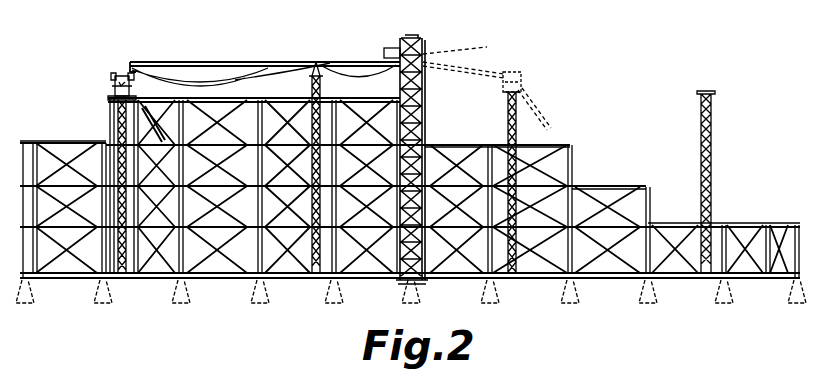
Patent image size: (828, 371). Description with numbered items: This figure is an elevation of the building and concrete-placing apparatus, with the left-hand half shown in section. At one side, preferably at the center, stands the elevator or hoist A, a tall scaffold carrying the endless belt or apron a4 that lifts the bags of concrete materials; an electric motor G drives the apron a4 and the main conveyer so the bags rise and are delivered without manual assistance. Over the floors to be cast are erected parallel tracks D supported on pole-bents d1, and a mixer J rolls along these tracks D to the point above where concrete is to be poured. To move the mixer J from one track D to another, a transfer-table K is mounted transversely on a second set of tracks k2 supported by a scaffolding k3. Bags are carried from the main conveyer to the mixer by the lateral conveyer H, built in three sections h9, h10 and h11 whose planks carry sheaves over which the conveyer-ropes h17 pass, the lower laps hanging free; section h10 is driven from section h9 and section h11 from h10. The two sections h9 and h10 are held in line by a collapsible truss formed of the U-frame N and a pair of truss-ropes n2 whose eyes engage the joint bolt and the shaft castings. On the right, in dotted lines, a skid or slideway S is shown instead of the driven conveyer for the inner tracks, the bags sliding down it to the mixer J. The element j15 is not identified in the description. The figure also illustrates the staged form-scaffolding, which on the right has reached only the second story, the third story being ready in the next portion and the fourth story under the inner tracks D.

The elevator or hoist A is at (424, 84).
The tower base a is at (400, 192).
The belt or apron a4 is at (441, 62).
The electric motor G is at (386, 49).
The first section of lateral conveyer h9 is at (166, 63).
The second section of lateral conveyer h10 is at (301, 63).
The third section of lateral conveyer h11 is at (352, 63).
The conveyer-ropes h17 is at (366, 79).
The U-frame N is at (236, 78).
The lateral conveyer H is at (263, 66).
The truss-ropes or cables n2 is at (234, 80).
The second set of tracks k2 is at (240, 103).
The scaffolding k3 is at (203, 135).
The transfer-table K is at (111, 92).
The mixer J is at (114, 74).
The parallel tracks D is at (708, 91).
The pole-bents d1 is at (700, 96).
The skid or slideway S is at (461, 49).
The diagonal stay j15 is at (150, 118).